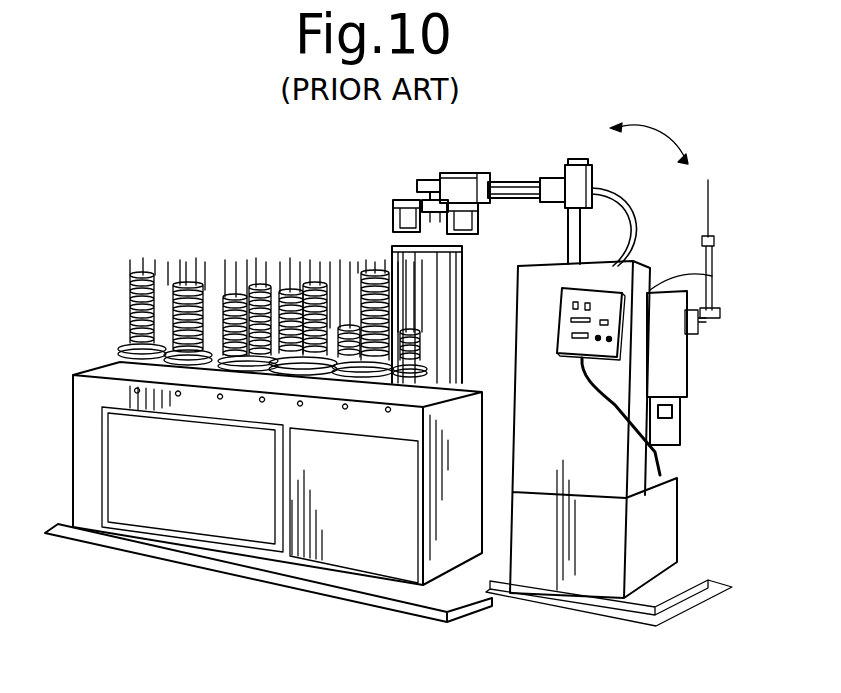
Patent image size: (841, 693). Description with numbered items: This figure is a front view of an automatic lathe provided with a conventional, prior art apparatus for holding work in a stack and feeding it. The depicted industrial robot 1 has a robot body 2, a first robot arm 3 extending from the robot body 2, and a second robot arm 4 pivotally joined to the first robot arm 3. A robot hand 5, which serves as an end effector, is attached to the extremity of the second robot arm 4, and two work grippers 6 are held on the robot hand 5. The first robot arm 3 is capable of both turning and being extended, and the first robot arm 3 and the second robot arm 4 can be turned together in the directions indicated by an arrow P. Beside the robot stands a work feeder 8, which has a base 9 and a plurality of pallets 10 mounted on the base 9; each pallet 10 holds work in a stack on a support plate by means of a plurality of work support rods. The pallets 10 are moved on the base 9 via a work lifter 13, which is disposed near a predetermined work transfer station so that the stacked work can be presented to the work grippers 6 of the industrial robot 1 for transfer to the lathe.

The industrial robot 1 is at (599, 236).
The robot body 2 is at (610, 441).
The first robot arm 3 is at (566, 247).
The second robot arm 4 is at (520, 176).
The robot hand 5 is at (462, 170).
The work grippers 6 is at (394, 218).
The work feeder 8 is at (488, 421).
The base 9 is at (80, 368).
The pallets 10 is at (130, 288).
The work lifter 13 is at (462, 268).
The arrow P is at (660, 132).